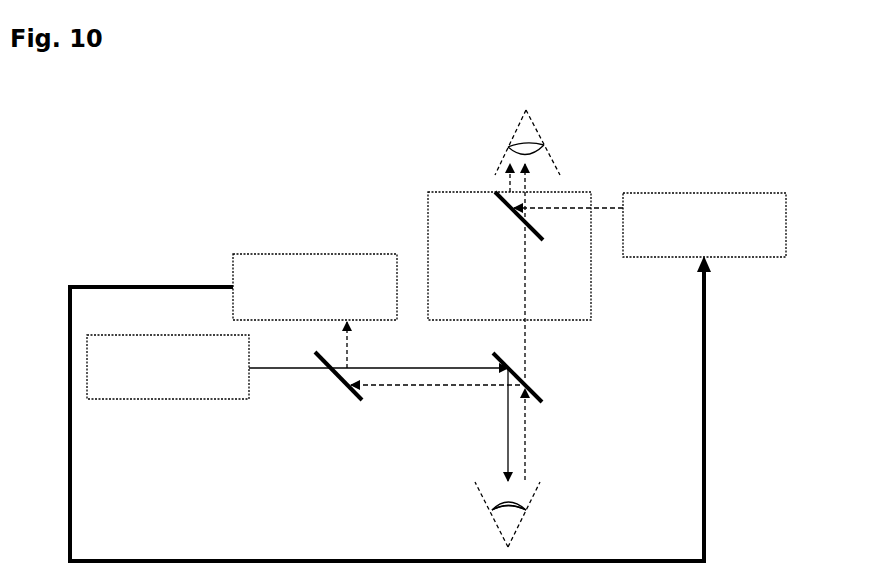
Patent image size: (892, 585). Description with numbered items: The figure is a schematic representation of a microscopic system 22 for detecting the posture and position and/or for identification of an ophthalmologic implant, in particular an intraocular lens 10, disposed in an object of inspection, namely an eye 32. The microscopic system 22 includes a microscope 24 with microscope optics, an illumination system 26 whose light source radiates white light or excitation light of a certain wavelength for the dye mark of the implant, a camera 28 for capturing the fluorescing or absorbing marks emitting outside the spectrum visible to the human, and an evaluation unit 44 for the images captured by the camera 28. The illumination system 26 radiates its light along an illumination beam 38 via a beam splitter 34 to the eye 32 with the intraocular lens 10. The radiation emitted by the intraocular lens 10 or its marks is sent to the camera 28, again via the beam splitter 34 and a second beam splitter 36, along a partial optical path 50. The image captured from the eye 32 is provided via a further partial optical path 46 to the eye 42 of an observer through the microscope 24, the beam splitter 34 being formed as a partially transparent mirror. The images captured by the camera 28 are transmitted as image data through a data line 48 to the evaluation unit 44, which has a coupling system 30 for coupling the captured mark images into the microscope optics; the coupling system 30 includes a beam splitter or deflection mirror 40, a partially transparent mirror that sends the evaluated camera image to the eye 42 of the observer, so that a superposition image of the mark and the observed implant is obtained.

The intraocular lens 10 is at (492, 508).
The microscopic system 22 is at (140, 180).
The microscope 24 is at (471, 272).
The illumination system 26 is at (151, 379).
The camera 28 is at (305, 300).
The coupling system 30 is at (632, 182).
The eye 32 is at (529, 510).
The beam splitter 34 is at (540, 390).
The second beam splitter 36 is at (340, 377).
The illumination beam 38 is at (432, 367).
The deflection mirror 40 is at (506, 207).
The eye of an observer 42 is at (498, 148).
The evaluation unit 44 is at (686, 237).
The further partial optical path 46 is at (530, 340).
The data line 48 is at (708, 500).
The partial optical path 50 is at (453, 385).